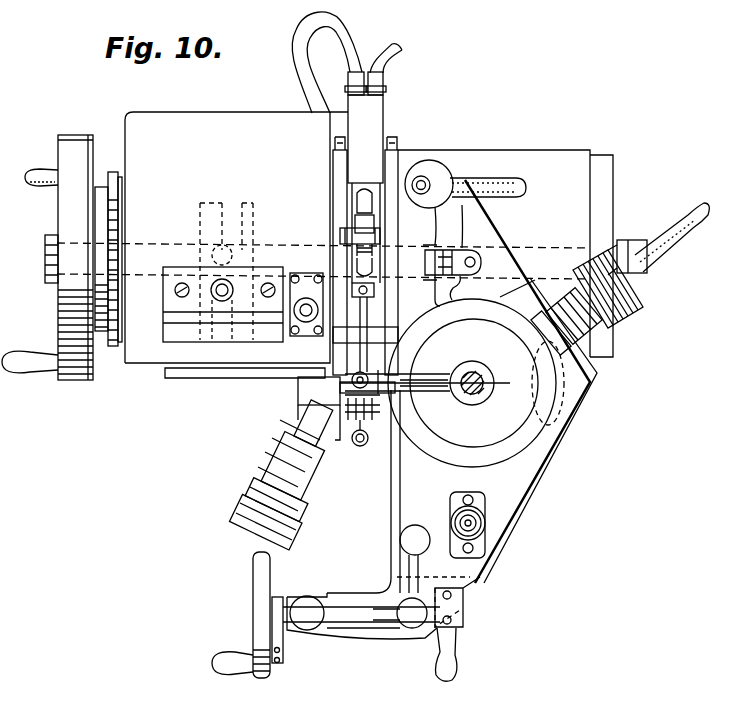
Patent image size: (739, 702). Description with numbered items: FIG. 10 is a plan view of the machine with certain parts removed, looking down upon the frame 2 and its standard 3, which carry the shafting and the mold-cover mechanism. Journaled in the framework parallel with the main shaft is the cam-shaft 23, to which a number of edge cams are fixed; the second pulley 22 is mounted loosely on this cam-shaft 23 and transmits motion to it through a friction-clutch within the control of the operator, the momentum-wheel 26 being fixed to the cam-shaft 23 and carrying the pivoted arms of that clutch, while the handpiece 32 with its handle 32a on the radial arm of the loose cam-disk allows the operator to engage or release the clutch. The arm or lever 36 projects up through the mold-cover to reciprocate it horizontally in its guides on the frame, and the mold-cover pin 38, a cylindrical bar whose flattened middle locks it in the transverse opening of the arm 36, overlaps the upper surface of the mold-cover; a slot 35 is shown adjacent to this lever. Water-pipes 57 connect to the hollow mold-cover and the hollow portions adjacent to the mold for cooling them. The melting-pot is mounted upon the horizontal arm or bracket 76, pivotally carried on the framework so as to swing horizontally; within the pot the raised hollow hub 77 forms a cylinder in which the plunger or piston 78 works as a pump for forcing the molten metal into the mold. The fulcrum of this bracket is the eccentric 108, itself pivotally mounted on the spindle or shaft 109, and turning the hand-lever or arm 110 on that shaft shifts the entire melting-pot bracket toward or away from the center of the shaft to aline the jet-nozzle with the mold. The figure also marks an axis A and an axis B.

The frame 2 is at (335, 245).
The standard 3 is at (374, 270).
The second pulley 22 is at (98, 185).
The cam-shaft 23 is at (229, 272).
The momentum-wheel 26 is at (69, 257).
The handpiece 32 is at (36, 186).
The handle 32a is at (30, 349).
The slot 35 is at (355, 198).
The arm or lever 36 is at (355, 220).
The mold-cover pin 38 is at (342, 236).
The water-pipes 57 is at (347, 62).
The horizontal arm or bracket 76 is at (487, 230).
The raised hollow hub 77 is at (497, 366).
The plunger or piston 78 is at (480, 391).
The eccentric 108 is at (436, 178).
The spindle or shaft 109 is at (423, 182).
The hand-lever or arm 110 is at (484, 186).
The axis A is at (370, 399).
The axis B is at (461, 388).